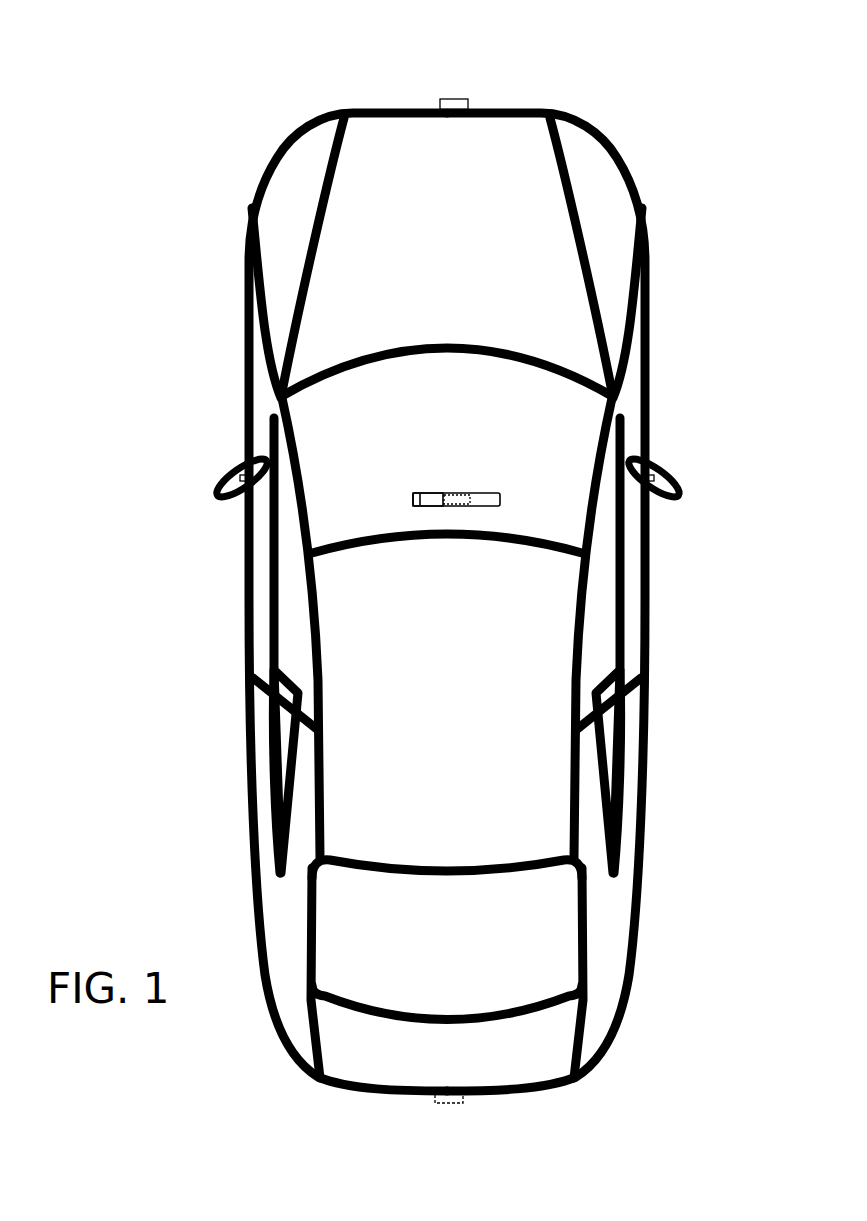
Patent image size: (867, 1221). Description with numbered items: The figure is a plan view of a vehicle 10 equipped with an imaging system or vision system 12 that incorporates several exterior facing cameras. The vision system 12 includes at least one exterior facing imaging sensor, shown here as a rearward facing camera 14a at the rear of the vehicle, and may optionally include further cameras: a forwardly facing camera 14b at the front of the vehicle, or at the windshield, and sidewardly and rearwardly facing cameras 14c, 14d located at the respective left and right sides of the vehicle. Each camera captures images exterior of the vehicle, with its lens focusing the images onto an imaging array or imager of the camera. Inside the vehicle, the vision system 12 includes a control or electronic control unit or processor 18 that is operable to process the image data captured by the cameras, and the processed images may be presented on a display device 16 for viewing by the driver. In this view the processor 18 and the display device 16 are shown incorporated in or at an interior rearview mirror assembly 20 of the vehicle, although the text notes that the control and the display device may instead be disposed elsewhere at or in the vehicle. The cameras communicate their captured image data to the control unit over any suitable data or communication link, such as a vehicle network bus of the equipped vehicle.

The vehicle 10 is at (196, 191).
The vision system 12 is at (398, 1123).
The rearward facing camera 14a is at (455, 1103).
The forwardly facing camera 14b is at (458, 98).
The sidewardly/rearwardly facing camera 14c is at (235, 470).
The sidewardly/rearwardly facing camera 14d is at (665, 472).
The display device 16 is at (429, 491).
The processor 18 is at (452, 492).
The interior rearview mirror assembly 20 is at (503, 491).